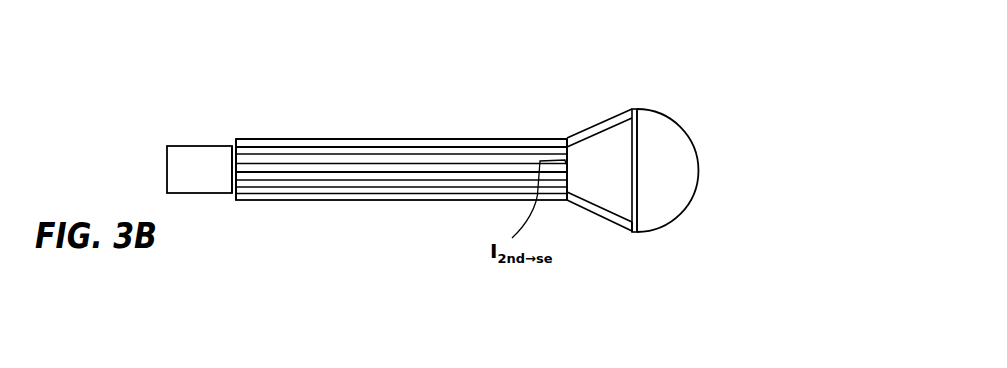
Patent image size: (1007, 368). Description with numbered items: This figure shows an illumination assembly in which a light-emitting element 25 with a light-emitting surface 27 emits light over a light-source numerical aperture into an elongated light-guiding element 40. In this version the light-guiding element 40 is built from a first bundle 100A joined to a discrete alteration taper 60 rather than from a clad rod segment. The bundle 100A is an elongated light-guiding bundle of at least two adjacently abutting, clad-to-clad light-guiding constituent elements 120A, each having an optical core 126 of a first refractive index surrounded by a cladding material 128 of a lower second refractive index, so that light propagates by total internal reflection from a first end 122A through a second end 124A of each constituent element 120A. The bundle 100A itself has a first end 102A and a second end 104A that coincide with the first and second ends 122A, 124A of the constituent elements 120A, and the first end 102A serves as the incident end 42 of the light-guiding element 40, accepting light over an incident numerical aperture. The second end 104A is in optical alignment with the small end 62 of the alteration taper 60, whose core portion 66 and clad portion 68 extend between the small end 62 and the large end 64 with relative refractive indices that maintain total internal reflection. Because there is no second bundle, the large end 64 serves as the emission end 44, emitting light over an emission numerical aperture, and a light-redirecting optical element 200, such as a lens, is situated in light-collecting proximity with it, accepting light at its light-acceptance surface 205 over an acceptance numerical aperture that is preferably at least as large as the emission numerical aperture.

The light-emitting element 25 is at (208, 186).
The light-emitting surface 27 is at (232, 179).
The first bundle 100A is at (305, 130).
The first end of the bundle 102A is at (236, 139).
The incident end 42 is at (300, 124).
The second end of the bundle 104A is at (567, 139).
The light-guiding element 40 is at (464, 130).
The light-guiding constituent element 120A is at (395, 188).
The first end of the constituent element 122A is at (238, 194).
The second end of the constituent element 124A is at (563, 192).
The optical core 126 is at (478, 176).
The cladding material 128 is at (448, 181).
The core portion 66 is at (590, 158).
The small end 62 is at (567, 140).
The alteration taper 60 is at (604, 153).
The clad portion 68 is at (610, 120).
The large end 64 is at (613, 226).
The emission end 44 is at (695, 273).
The light-acceptance surface 205 is at (638, 132).
The light-redirecting optical element 200 is at (685, 182).